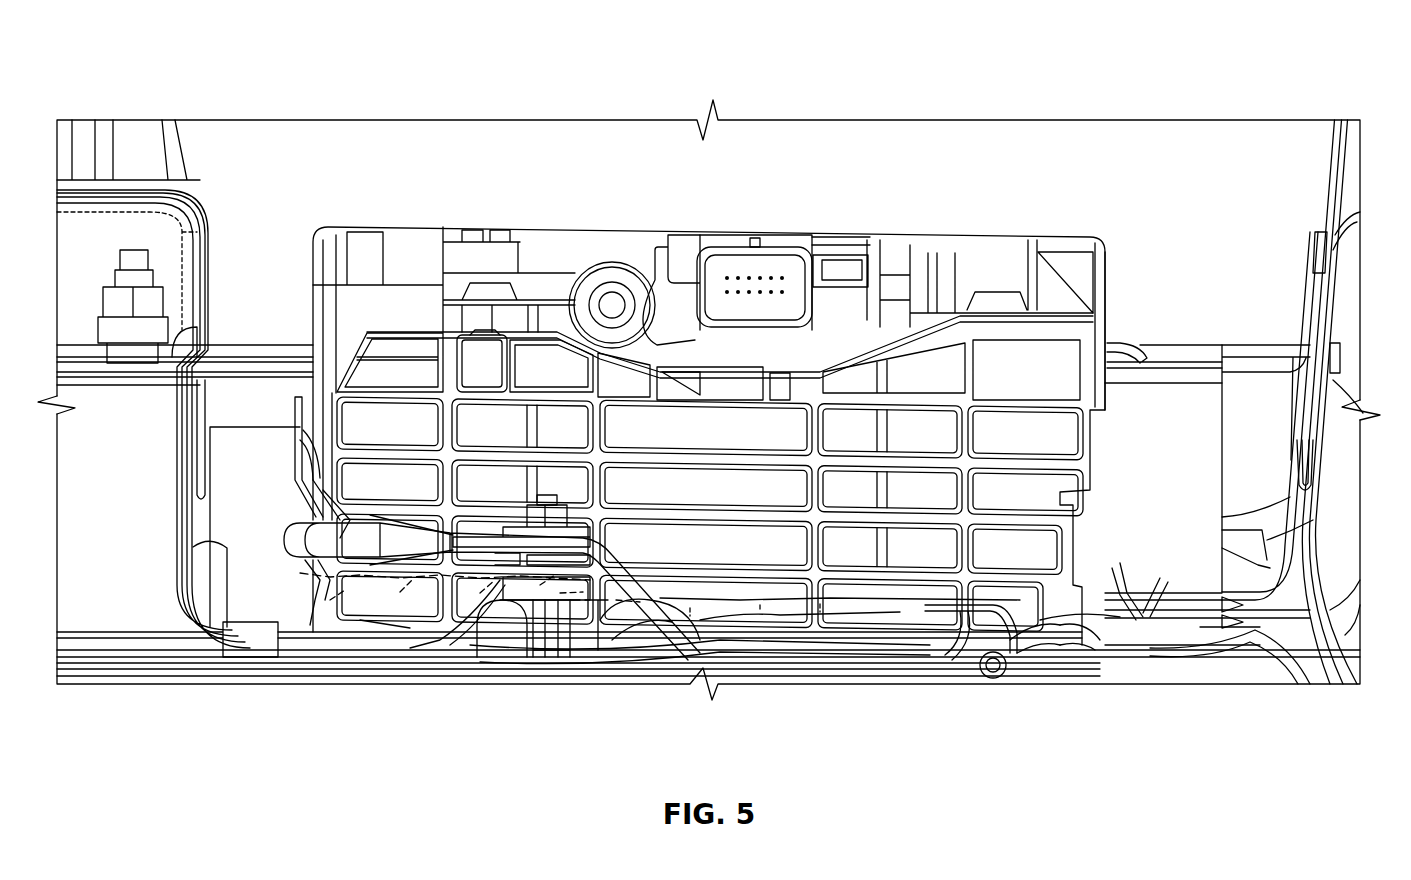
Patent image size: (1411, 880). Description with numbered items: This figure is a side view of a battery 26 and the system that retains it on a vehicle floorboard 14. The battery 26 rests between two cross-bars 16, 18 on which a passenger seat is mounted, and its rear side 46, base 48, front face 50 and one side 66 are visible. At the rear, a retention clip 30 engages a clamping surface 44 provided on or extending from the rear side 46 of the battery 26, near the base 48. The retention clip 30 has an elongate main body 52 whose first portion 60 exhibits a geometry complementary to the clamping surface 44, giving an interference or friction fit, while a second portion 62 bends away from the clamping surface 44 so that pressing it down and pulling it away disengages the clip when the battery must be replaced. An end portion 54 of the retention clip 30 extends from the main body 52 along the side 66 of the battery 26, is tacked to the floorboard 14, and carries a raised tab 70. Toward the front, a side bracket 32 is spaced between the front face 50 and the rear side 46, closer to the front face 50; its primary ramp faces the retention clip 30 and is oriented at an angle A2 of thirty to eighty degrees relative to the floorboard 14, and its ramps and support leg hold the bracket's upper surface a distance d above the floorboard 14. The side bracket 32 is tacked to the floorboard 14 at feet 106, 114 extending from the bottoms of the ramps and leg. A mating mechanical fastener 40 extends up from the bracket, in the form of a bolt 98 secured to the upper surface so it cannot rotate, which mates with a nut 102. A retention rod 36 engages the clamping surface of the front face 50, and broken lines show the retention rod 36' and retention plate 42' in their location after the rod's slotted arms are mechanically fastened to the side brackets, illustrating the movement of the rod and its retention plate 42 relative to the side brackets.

The floorboard 14 is at (1220, 587).
The cross-bar 16 is at (1310, 535).
The cross-bar 18 is at (177, 527).
The battery 26 is at (880, 245).
The retention clip 30 is at (1162, 642).
The side bracket 32 is at (573, 640).
The retention rod 36 is at (464, 587).
The retention rod 36' is at (433, 592).
The second mechanical fastener 40 is at (549, 495).
The retention plate 42 is at (277, 454).
The retention plate 42' is at (291, 509).
The clamping surface 44 is at (1082, 592).
The rear side 46 is at (1107, 328).
The base 48 is at (968, 630).
The front face 50 is at (320, 423).
The main body 52 is at (1100, 642).
The end portion 54 is at (1055, 650).
The first portion 60 is at (1152, 600).
The second portion 62 is at (1122, 575).
The side 66 is at (684, 258).
The raised tab 70 is at (942, 620).
The bolt 98 is at (535, 615).
The nut 102 is at (535, 515).
The foot 106 is at (735, 660).
The foot 114 is at (462, 640).
The distance d is at (608, 652).
The angle A2 is at (648, 650).